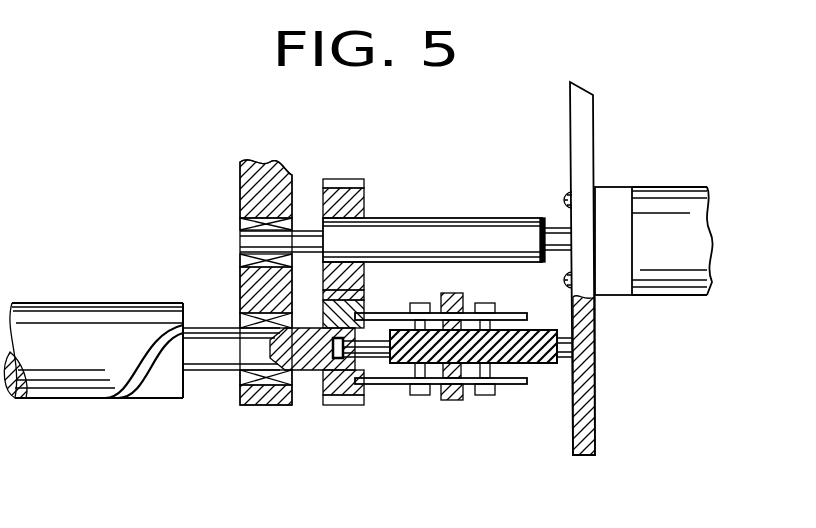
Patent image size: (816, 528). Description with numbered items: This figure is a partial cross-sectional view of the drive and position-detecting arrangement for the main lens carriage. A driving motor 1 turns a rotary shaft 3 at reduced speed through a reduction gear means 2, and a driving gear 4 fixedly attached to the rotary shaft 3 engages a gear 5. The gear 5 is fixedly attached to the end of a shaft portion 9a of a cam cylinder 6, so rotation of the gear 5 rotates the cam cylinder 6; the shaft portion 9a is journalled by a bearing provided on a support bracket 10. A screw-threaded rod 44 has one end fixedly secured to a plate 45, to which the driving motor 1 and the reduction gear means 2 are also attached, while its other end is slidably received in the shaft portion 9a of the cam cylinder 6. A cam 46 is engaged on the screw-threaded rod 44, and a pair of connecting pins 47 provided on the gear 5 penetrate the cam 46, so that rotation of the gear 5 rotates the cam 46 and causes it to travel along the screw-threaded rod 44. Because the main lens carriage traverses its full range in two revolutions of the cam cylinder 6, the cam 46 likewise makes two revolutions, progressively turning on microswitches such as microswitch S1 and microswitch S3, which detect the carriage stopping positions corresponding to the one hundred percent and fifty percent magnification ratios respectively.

The driving motor 1 is at (690, 284).
The reduction gear means 2 is at (615, 282).
The rotary shaft 3 is at (498, 236).
The driving gear 4 is at (341, 187).
The gear 5 is at (340, 406).
The cam cylinder 6 is at (75, 396).
The shaft portion 9a is at (212, 330).
The support bracket 10 is at (250, 197).
The screw-threaded rod 44 is at (552, 366).
The plate 45 is at (597, 428).
The cam 46 is at (453, 402).
The connecting pins 47 is at (386, 313).
The microswitch S1 is at (420, 397).
The microswitch S3 is at (486, 397).